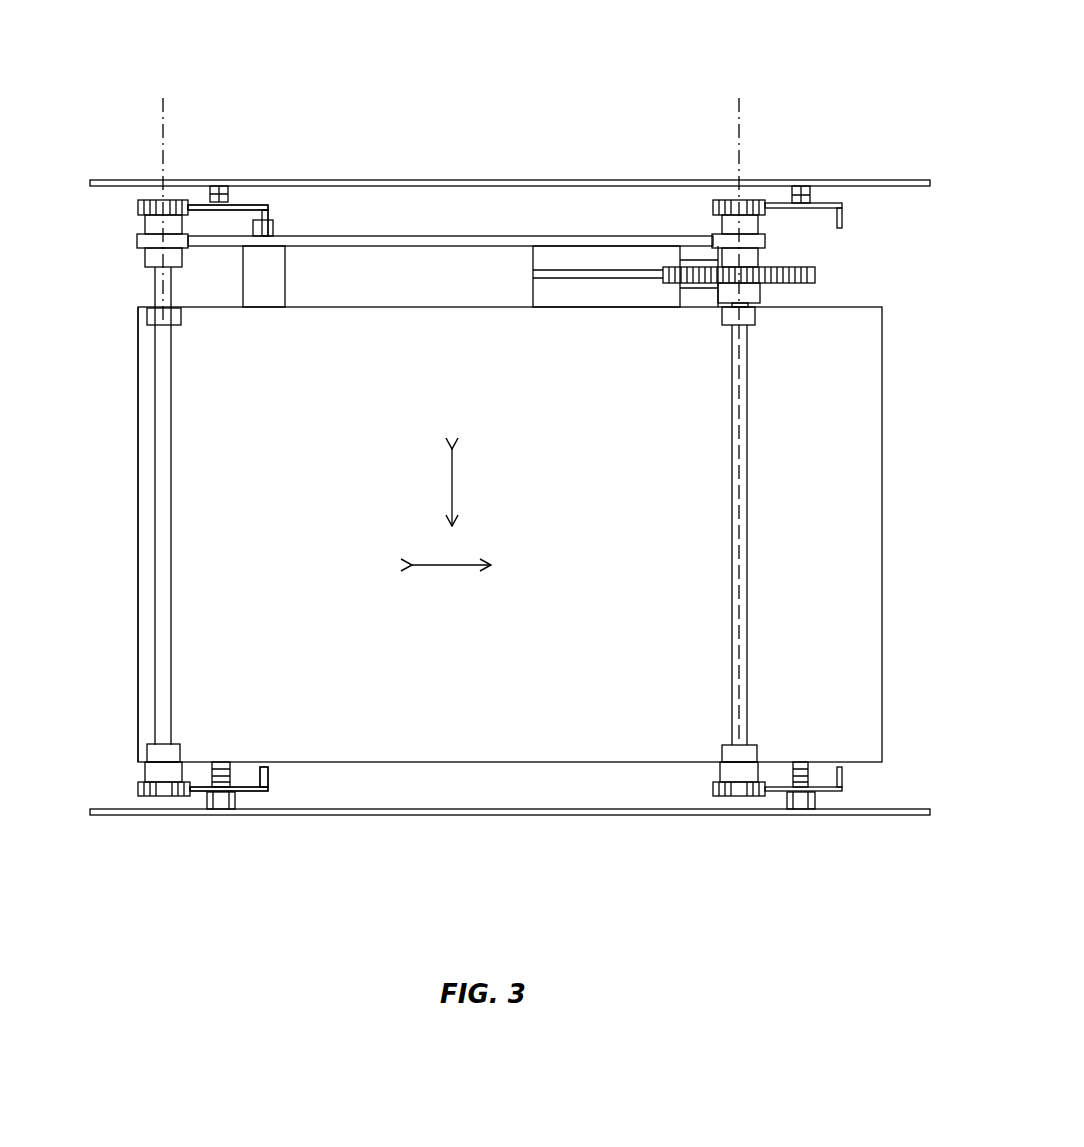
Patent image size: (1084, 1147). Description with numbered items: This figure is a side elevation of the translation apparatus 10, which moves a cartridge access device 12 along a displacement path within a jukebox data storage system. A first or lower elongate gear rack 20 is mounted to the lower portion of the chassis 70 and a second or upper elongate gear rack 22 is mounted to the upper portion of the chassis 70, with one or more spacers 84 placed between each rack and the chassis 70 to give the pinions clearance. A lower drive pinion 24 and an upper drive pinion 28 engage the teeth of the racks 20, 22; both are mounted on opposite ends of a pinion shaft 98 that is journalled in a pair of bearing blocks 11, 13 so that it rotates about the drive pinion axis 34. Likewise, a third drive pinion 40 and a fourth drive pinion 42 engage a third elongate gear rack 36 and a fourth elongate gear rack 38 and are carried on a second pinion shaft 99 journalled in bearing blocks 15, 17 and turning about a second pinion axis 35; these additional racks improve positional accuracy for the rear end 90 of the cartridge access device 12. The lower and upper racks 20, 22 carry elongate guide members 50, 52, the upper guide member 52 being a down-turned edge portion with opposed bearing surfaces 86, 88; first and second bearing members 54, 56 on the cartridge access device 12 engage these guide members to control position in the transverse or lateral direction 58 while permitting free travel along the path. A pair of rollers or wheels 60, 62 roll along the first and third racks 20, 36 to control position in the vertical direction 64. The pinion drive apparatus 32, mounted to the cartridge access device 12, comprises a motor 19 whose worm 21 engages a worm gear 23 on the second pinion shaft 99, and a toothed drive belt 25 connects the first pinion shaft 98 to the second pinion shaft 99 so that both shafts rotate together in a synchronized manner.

The translation apparatus 10 is at (328, 46).
The bearing block 11 is at (147, 750).
The cartridge access device 12 is at (137, 536).
The bearing block 13 is at (182, 320).
The bearing block 15 is at (722, 750).
The bearing block 17 is at (757, 315).
The motor 19 is at (533, 288).
The first or lower elongate gear rack 20 is at (195, 795).
The worm 21 is at (698, 288).
The second or upper elongate gear rack 22 is at (200, 200).
The worm gear 23 is at (815, 279).
The first or lower drive pinion 24 is at (136, 789).
The toothed drive belt 25 is at (572, 236).
The second or upper drive pinion 28 is at (136, 208).
The pinion drive apparatus 32 is at (531, 262).
The drive pinion axis 34 is at (163, 118).
The second pinion axis 35 is at (738, 118).
The third elongate gear rack 36 is at (775, 795).
The fourth elongate gear rack 38 is at (775, 198).
The third or lower drive pinion 40 is at (711, 789).
The fourth or upper drive pinion 42 is at (711, 208).
The first elongate guide member 50 is at (268, 788).
The second elongate guide member 52 is at (268, 205).
The first bearing member 54 is at (275, 768).
The second bearing member 56 is at (273, 230).
The transverse or lateral direction 58 is at (452, 565).
The roller or wheel 60 is at (212, 770).
The roller or wheel 62 is at (793, 772).
The vertical direction 64 is at (452, 489).
The chassis 70 is at (878, 180).
The spacer 84 is at (237, 800).
The bearing surface 86 is at (257, 215).
The bearing surface 88 is at (267, 213).
The rear end 90 is at (882, 533).
The pinion shaft 98 is at (171, 532).
The second pinion shaft 99 is at (732, 533).